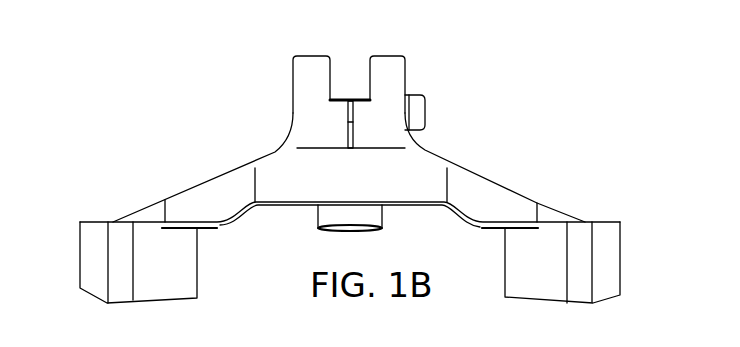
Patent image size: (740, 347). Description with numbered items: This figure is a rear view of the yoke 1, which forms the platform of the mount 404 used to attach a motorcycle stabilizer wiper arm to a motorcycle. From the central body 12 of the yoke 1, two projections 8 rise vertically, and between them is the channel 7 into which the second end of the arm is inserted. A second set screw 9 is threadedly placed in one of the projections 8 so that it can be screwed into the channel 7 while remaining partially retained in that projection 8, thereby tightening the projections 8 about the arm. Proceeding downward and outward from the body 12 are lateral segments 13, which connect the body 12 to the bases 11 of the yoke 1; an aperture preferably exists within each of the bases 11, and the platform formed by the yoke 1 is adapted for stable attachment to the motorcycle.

The mount 404 is at (165, 64).
The yoke 1 is at (175, 143).
The channel 7 is at (350, 68).
The projections 8 is at (302, 75).
The second set screw 9 is at (420, 108).
The bases 11 is at (97, 288).
The body 12 is at (280, 165).
The lateral segments 13 is at (185, 200).